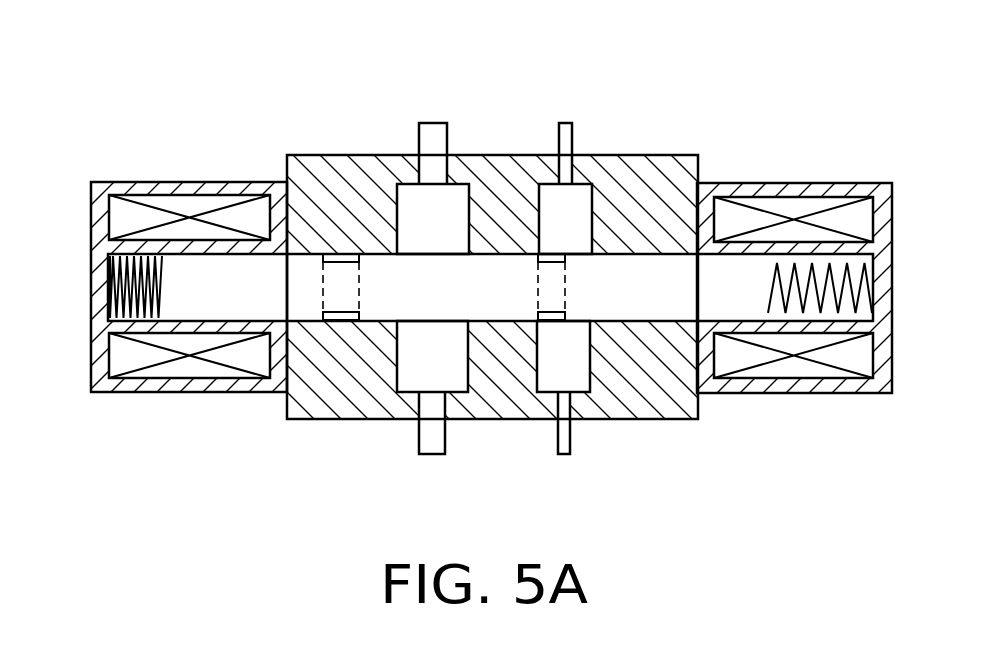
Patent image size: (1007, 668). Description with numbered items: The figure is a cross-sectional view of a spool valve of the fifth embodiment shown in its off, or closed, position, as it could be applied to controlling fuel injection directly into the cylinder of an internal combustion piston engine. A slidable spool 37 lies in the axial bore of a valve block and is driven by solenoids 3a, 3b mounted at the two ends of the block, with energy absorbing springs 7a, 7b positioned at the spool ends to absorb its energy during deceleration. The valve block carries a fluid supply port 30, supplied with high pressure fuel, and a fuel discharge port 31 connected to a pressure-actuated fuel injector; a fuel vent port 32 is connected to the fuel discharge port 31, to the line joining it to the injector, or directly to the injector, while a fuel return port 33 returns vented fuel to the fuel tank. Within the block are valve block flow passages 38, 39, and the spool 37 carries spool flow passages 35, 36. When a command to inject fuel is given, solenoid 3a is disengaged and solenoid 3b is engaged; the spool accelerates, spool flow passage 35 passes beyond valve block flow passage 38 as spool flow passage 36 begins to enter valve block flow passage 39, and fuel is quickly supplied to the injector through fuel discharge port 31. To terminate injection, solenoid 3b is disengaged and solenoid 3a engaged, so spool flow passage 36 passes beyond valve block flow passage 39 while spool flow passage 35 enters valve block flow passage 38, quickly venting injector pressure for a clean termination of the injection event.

The solenoid 3a is at (195, 205).
The solenoid 3b is at (800, 210).
The energy absorbing spring 7a is at (110, 278).
The energy absorbing spring 7b is at (833, 267).
The fluid supply port 30 is at (425, 432).
The fuel discharge port 31 is at (425, 138).
The fuel vent port 32 is at (573, 135).
The fuel return port 33 is at (558, 442).
The spool flow passage 35 is at (553, 247).
The spool flow passage 36 is at (342, 318).
The spool 37 is at (647, 299).
The valve block flow passage 38 is at (578, 235).
The valve block flow passage 39 is at (447, 235).